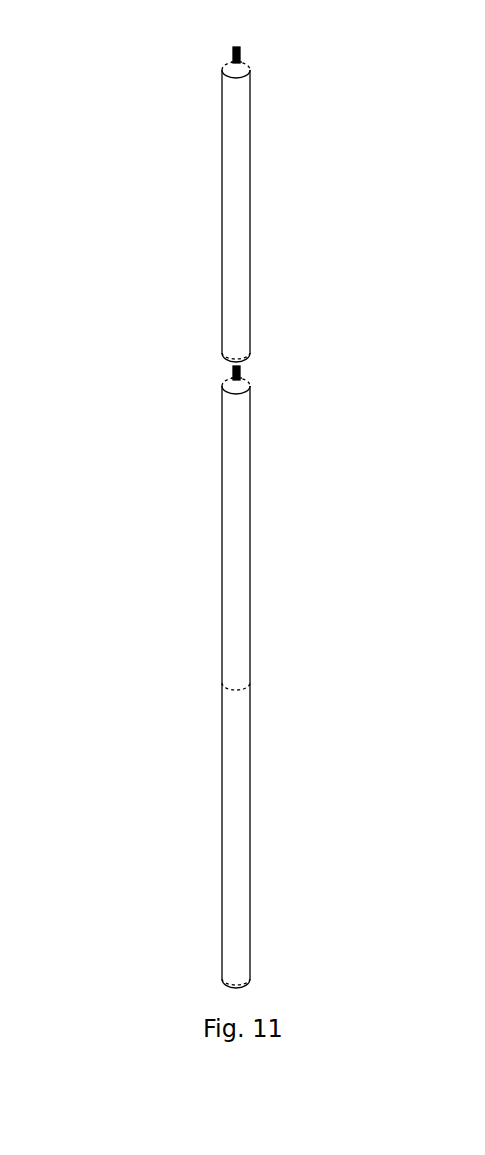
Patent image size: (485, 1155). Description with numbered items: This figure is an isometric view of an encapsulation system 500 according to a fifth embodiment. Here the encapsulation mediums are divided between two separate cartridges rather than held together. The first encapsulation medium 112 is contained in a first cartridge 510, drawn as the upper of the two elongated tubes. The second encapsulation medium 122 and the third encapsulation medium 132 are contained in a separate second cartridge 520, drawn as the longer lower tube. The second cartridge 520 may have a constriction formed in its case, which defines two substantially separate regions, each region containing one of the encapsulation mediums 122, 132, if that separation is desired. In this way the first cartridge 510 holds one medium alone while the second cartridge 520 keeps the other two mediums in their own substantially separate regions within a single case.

The encapsulation system 500 is at (228, 517).
The first cartridge 510 is at (221, 204).
The second cartridge 520 is at (251, 677).
The first encapsulation medium 112 is at (235, 207).
The second encapsulation medium 122 is at (238, 523).
The third encapsulation medium 132 is at (243, 848).